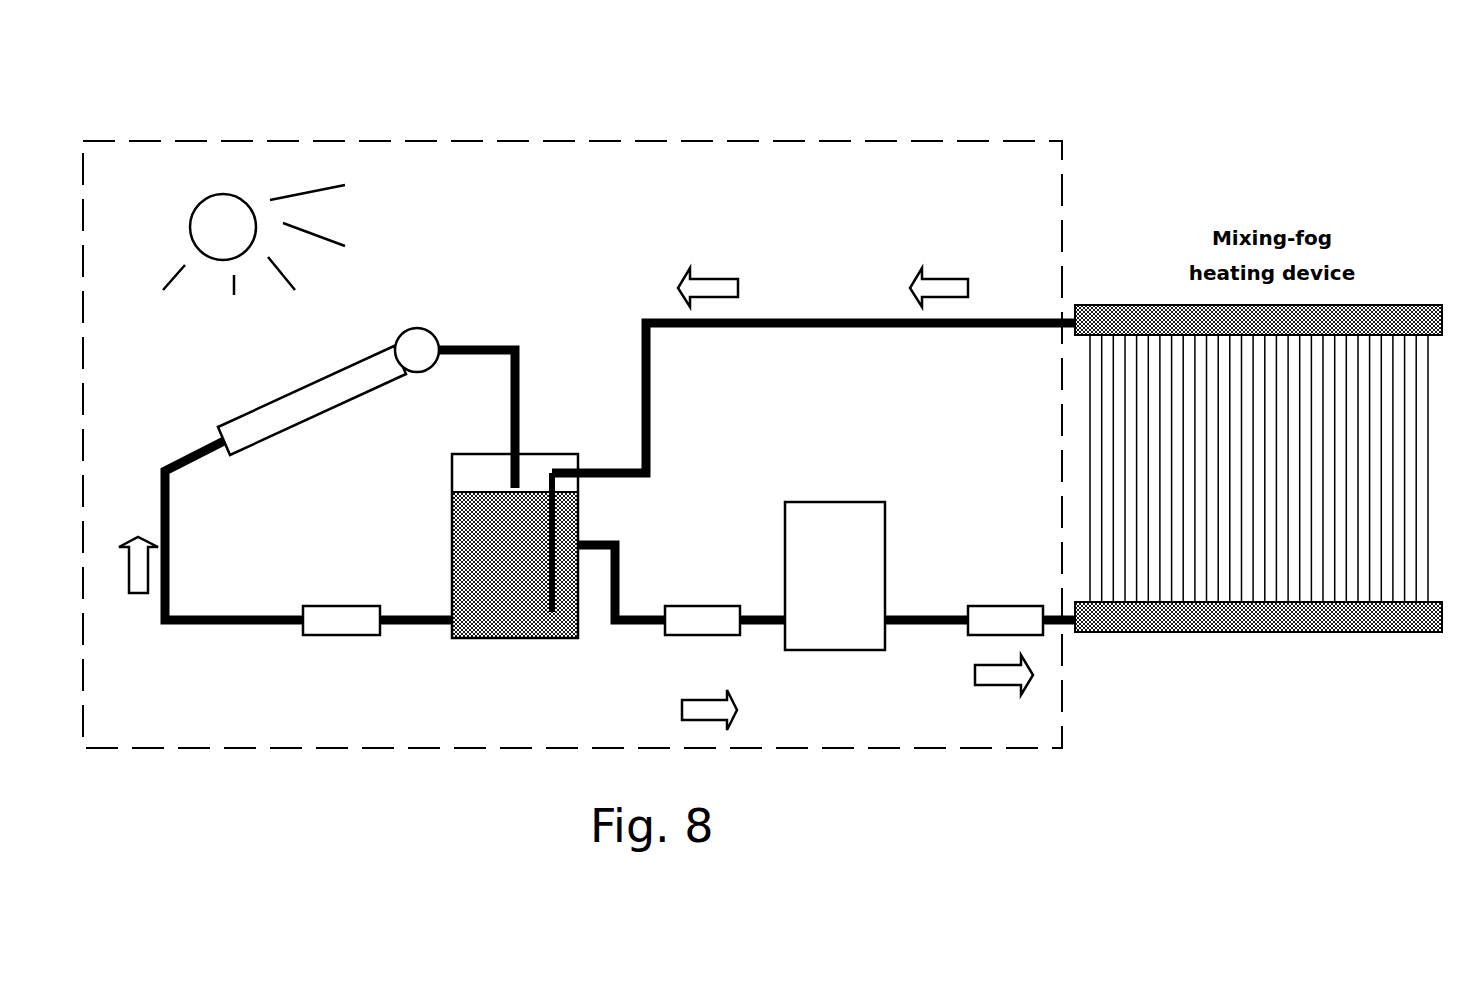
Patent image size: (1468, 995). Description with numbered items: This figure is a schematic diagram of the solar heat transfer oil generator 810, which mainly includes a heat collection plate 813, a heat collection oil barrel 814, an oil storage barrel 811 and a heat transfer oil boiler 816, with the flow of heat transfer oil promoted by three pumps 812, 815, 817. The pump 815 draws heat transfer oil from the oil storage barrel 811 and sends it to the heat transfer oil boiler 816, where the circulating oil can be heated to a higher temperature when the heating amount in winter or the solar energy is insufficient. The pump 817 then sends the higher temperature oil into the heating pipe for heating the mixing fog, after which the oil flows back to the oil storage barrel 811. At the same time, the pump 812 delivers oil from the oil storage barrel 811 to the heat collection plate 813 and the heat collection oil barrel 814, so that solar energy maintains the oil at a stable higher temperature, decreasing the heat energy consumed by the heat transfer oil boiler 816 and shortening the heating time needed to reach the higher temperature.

The solar heat transfer oil generator 810 is at (597, 139).
The oil storage barrel 811 is at (483, 454).
The pump 812 is at (310, 604).
The heat collection plate 813 is at (310, 381).
The heat collection oil barrel 814 is at (427, 330).
The pump 815 is at (725, 606).
The heat transfer oil boiler 816 is at (848, 502).
The pump 817 is at (1025, 606).